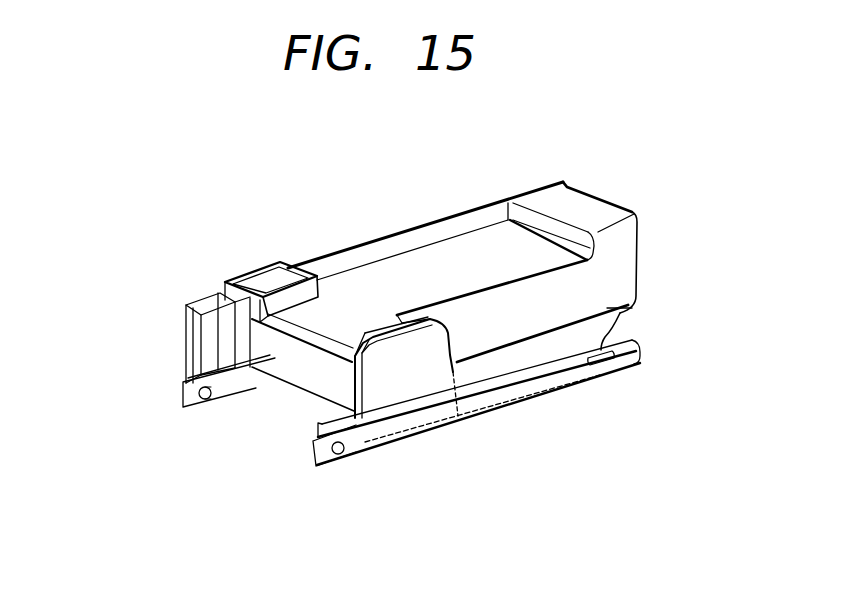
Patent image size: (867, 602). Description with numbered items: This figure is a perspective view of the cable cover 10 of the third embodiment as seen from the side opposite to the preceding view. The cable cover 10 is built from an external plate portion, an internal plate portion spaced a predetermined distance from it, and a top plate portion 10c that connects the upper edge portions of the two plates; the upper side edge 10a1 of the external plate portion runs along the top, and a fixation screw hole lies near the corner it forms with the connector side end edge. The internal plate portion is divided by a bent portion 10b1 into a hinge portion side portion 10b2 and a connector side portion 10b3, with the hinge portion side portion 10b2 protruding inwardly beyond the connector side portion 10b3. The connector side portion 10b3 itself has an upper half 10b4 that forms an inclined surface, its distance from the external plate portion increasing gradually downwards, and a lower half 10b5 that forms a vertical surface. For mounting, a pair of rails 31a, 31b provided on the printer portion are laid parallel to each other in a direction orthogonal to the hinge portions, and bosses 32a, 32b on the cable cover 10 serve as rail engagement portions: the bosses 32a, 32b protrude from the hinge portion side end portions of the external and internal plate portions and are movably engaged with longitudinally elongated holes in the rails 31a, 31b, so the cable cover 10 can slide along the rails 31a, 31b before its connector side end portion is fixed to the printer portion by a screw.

The cable cover 10 is at (448, 310).
The upper side edge 10a1 is at (453, 208).
The top plate portion 10c is at (495, 248).
The bent portion 10b1 is at (457, 356).
The hinge portion side portion 10b2 is at (397, 398).
The connector side portion 10b3 is at (522, 350).
The upper half 10b4 is at (597, 298).
The lower half 10b5 is at (570, 343).
The rail 31a is at (185, 393).
The rail 31b is at (320, 460).
The boss 32a is at (207, 399).
The boss 32b is at (340, 455).